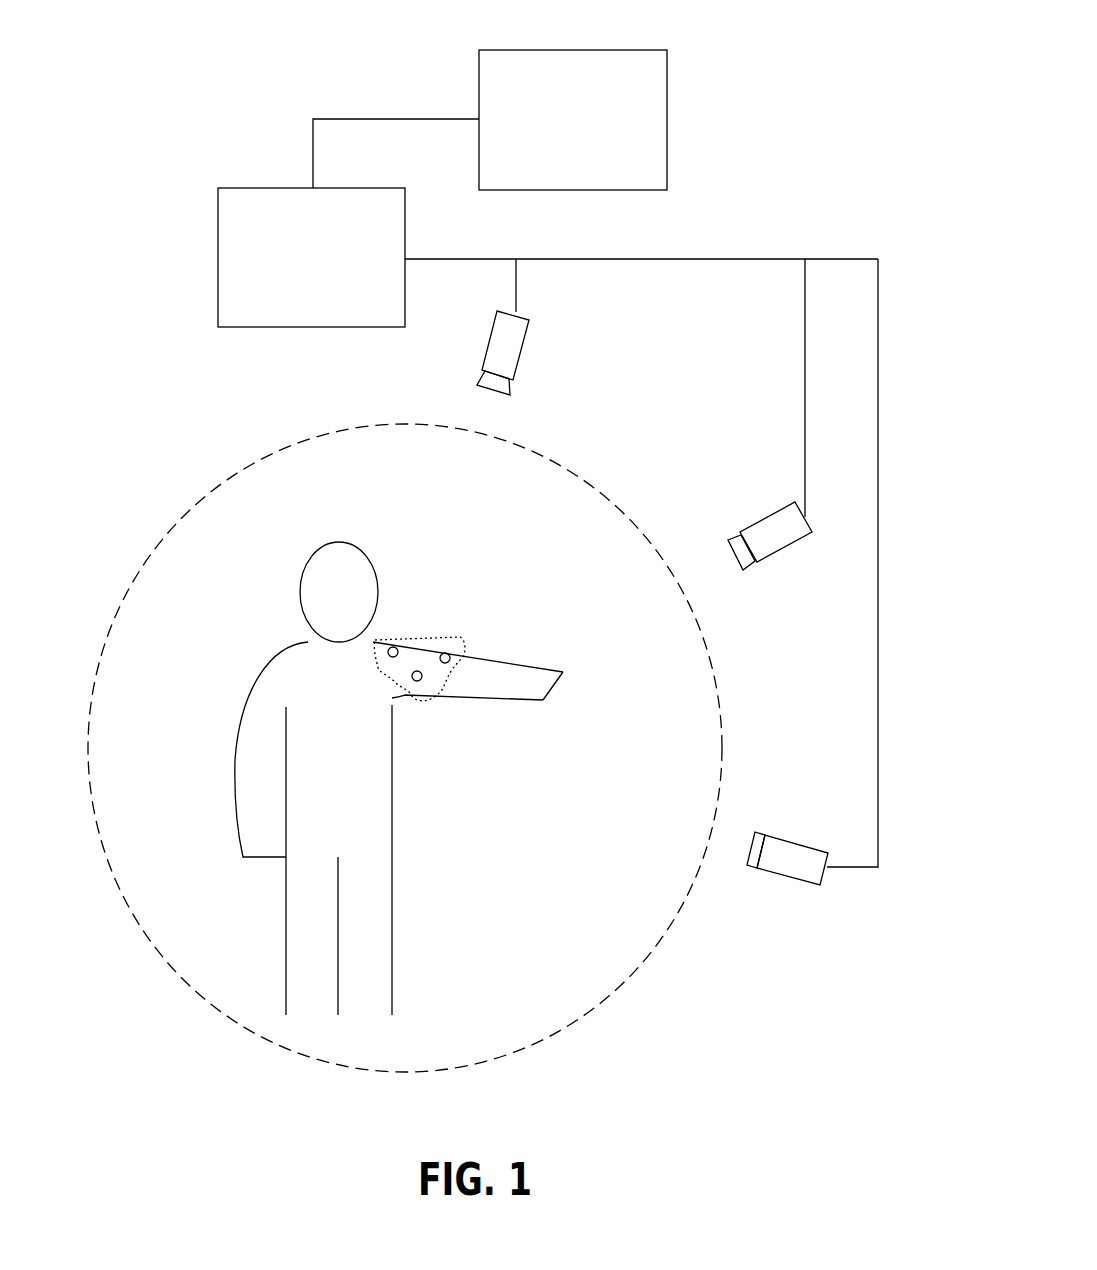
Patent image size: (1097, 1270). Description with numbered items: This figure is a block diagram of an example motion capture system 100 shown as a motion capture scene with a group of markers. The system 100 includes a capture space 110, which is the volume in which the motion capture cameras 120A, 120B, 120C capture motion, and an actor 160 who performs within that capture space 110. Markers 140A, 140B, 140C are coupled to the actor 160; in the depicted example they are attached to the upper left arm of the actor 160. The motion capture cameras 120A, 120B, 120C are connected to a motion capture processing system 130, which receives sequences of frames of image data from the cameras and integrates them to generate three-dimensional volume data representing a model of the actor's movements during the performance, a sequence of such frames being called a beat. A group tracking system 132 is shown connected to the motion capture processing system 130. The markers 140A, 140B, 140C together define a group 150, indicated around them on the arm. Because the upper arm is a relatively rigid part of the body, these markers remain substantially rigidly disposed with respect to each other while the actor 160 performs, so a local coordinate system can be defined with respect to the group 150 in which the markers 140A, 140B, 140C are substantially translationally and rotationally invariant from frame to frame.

The motion capture system 100 is at (812, 133).
The capture space 110 is at (204, 586).
The motion capture camera 120A is at (525, 345).
The motion capture camera 120B is at (768, 558).
The motion capture camera 120C is at (778, 875).
The motion capture processing system 130 is at (295, 310).
The group tracking system 132 is at (555, 171).
The marker 140A is at (394, 647).
The marker 140B is at (420, 671).
The marker 140C is at (449, 654).
The group 150 is at (450, 675).
The actor 160 is at (392, 915).